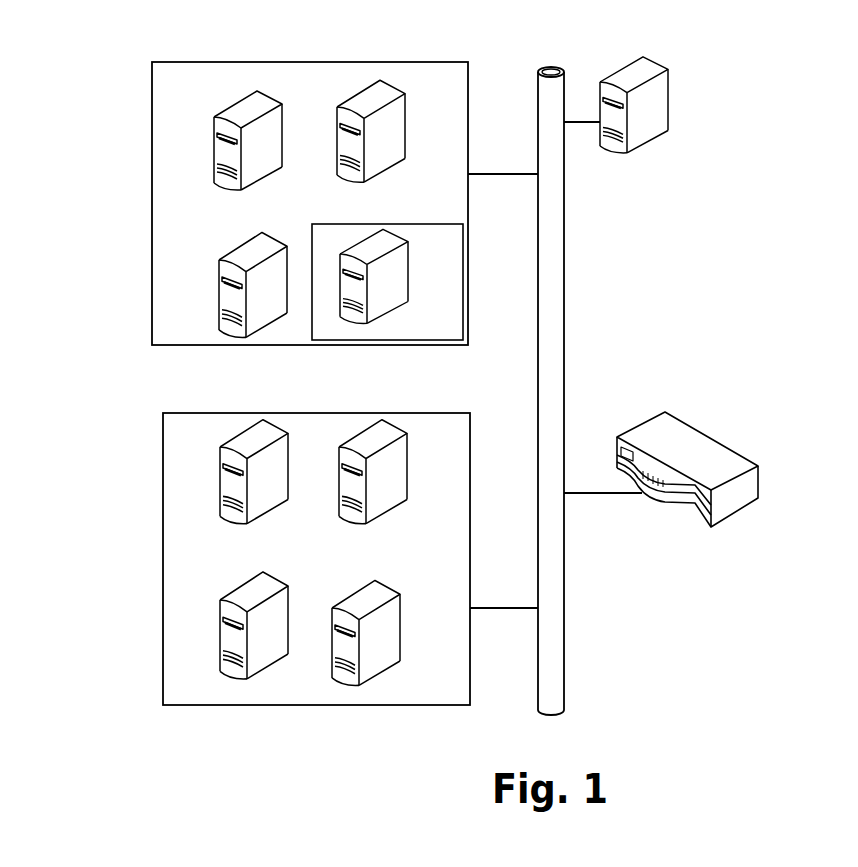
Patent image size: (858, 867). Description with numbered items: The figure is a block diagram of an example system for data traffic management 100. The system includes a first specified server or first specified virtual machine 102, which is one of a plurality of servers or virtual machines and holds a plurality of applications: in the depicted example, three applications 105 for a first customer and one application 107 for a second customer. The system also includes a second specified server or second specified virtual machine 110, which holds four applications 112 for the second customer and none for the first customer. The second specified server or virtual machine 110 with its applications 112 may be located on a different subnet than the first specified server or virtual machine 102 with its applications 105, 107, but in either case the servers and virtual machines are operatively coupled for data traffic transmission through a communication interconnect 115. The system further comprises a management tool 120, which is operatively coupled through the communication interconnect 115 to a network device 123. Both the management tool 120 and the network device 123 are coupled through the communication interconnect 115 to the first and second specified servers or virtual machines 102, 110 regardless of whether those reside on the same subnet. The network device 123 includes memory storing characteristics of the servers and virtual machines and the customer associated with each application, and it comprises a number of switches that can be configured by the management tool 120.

The system for data traffic management 100 is at (109, 76).
The first specified server or first specified virtual machine 102 is at (149, 196).
The applications 105 is at (213, 237).
The application 107 is at (447, 313).
The second specified server or second specified virtual machine 110 is at (161, 553).
The applications 112 is at (315, 559).
The communication interconnect 115 is at (548, 64).
The management tool 120 is at (676, 104).
The network device 123 is at (763, 478).